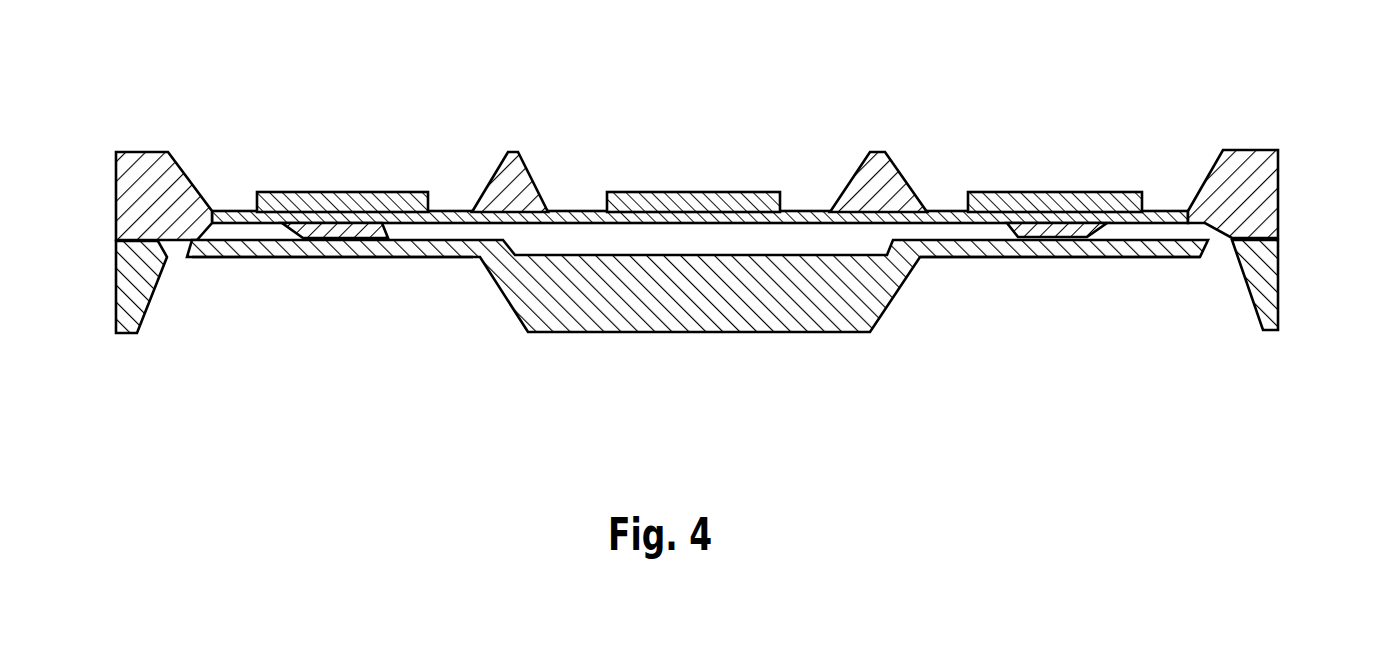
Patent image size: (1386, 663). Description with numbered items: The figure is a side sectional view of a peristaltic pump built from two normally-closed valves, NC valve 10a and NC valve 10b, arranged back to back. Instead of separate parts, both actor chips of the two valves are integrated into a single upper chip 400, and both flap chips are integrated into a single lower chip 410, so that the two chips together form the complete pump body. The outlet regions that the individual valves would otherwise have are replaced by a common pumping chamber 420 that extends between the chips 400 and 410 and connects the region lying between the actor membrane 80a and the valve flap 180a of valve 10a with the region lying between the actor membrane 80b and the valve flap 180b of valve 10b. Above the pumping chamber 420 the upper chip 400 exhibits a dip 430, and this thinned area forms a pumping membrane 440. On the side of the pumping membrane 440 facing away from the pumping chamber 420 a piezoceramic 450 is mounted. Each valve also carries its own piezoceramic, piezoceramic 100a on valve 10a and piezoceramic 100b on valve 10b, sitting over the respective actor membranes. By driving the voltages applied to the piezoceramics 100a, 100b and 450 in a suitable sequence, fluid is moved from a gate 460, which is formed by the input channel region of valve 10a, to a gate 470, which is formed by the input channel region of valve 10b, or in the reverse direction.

The NC valve 10a is at (353, 150).
The NC valve 10b is at (1088, 140).
The actor membrane 80a is at (445, 211).
The actor membrane 80b is at (1168, 211).
The piezoceramic 100a is at (300, 193).
The piezoceramic 100b is at (1012, 192).
The valve flap 180a is at (267, 258).
The valve flap 180b is at (1142, 255).
The chip 400 is at (1278, 190).
The chip 410 is at (1278, 278).
The pumping chamber 420 is at (805, 240).
The dip 430 is at (570, 177).
The pumping membrane 440 is at (807, 211).
The piezoceramic 450 is at (683, 192).
The gate 460 is at (357, 274).
The gate 470 is at (1048, 266).